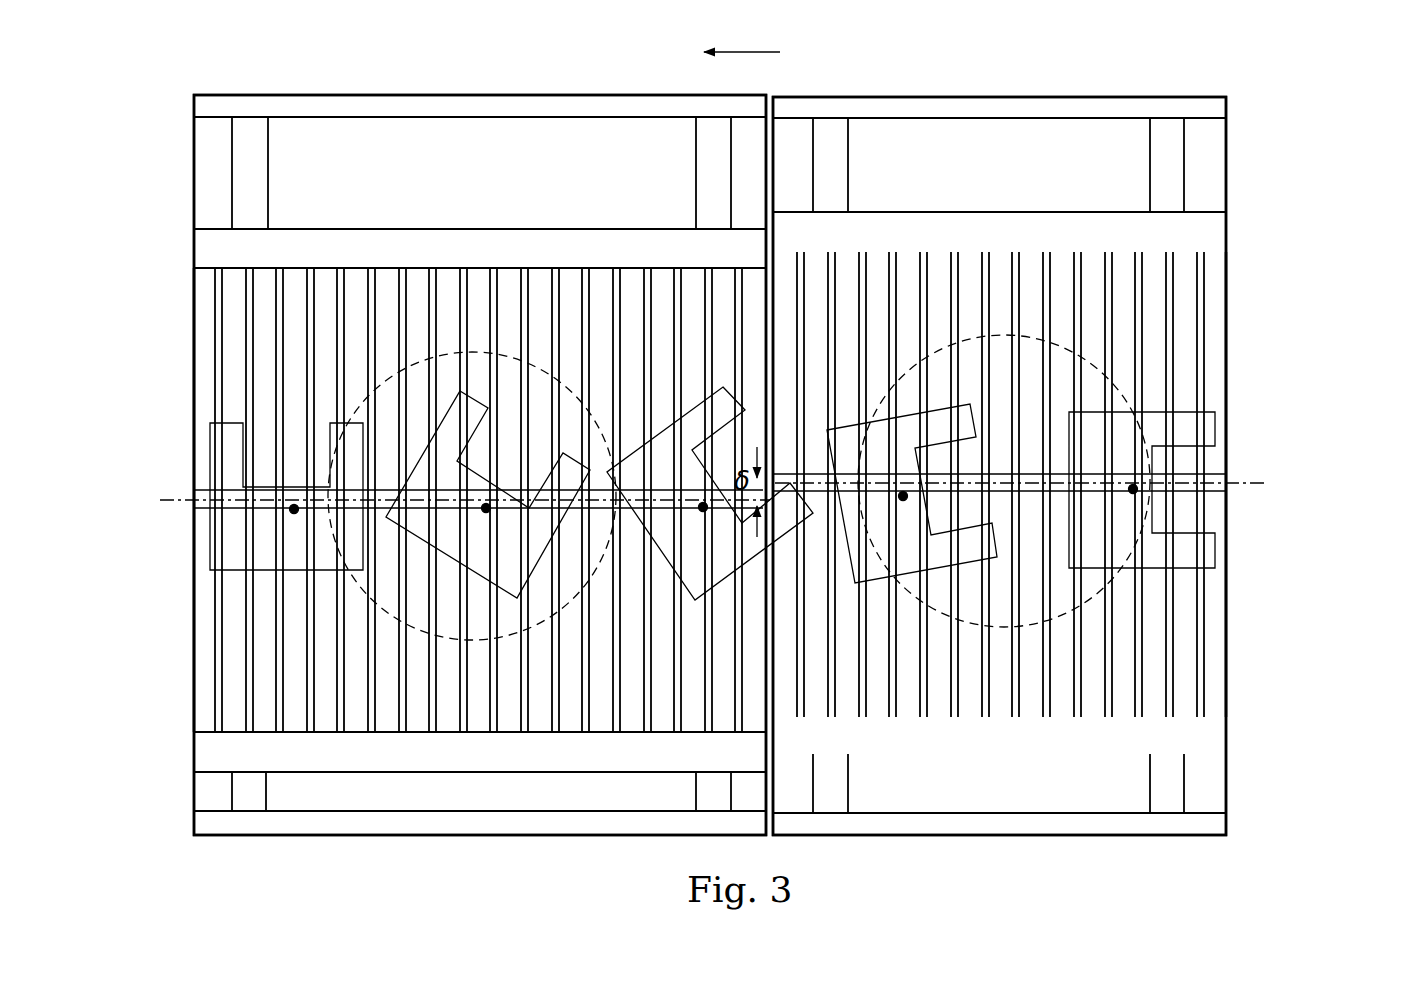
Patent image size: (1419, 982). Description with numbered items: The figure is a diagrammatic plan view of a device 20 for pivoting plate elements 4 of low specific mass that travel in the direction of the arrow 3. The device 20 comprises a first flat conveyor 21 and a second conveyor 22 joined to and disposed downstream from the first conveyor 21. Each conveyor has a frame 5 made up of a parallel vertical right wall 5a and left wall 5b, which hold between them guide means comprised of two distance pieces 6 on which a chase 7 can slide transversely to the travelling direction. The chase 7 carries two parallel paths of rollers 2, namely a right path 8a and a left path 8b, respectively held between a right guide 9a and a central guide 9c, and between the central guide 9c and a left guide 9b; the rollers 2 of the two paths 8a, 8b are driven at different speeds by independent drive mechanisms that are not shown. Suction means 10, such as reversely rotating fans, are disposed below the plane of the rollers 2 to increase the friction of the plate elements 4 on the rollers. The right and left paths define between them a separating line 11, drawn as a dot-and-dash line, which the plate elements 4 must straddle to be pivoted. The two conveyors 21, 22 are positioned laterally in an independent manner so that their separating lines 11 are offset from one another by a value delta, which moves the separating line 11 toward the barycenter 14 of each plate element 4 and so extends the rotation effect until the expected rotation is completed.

The device for pivoting plate elements 20 is at (1312, 100).
The first flat conveyor 21 is at (1006, 68).
The second conveyor 22 is at (520, 66).
The travelling direction arrow 3 is at (742, 52).
The rollers 2 is at (194, 302).
The plate elements 4 is at (210, 423).
The frame 5 is at (342, 852).
The right wall 5a is at (194, 100).
The left wall 5b is at (194, 818).
The distance pieces 6 is at (265, 788).
The chase 7 is at (448, 216).
The right path 8a is at (178, 380).
The left path 8b is at (176, 604).
The right guide 9a is at (194, 250).
The left guide 9b is at (194, 745).
The central guide 9c is at (207, 492).
The suction means 10 is at (545, 356).
The separating line 11 is at (165, 505).
The barycenter 14 is at (294, 509).